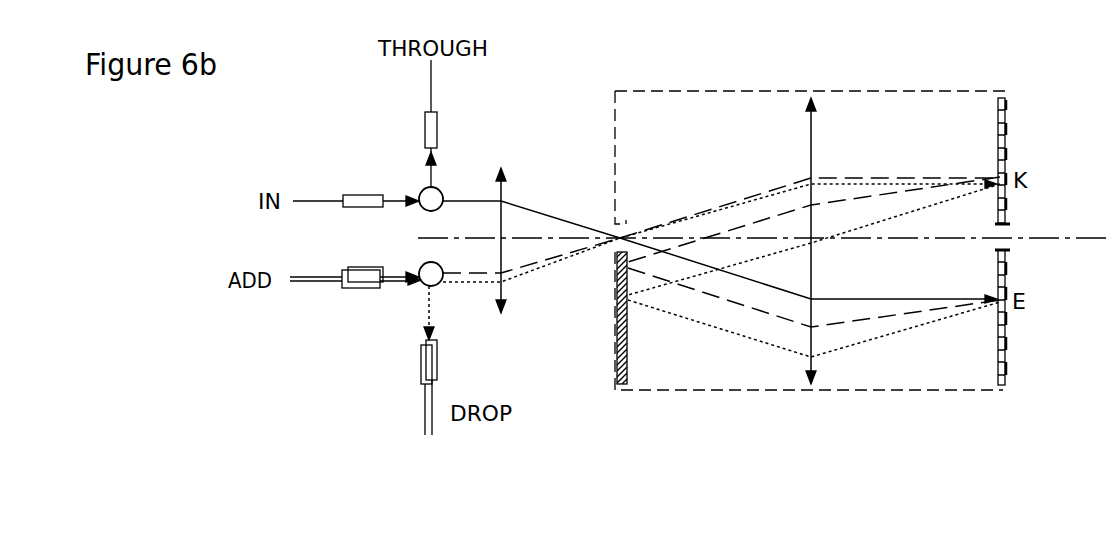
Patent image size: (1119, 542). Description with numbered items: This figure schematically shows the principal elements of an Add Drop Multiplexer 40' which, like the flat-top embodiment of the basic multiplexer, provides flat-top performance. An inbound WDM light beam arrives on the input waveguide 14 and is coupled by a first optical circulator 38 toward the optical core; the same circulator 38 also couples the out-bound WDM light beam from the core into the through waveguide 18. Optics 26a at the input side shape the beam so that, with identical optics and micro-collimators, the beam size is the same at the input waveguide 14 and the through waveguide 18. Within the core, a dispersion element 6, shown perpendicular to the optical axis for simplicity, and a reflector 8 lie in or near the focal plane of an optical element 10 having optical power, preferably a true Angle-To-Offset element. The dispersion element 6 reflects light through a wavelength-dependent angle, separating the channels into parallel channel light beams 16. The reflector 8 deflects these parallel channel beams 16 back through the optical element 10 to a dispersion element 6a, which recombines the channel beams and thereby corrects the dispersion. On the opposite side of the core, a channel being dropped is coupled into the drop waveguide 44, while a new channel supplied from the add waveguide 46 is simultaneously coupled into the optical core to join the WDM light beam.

The input waveguide 14 is at (320, 199).
The through waveguide 18 is at (430, 88).
The first optical circulator 38 is at (444, 190).
The optics 26a is at (507, 199).
The optical element 10 is at (807, 148).
The dispersion element 6a is at (1007, 127).
The dispersion element 6 is at (1005, 345).
The reflector 8 is at (617, 368).
The channel light beam 16 is at (872, 318).
The Add Drop Multiplexer 40' is at (855, 216).
The drop waveguide 44 is at (425, 417).
The add waveguide 46 is at (322, 282).